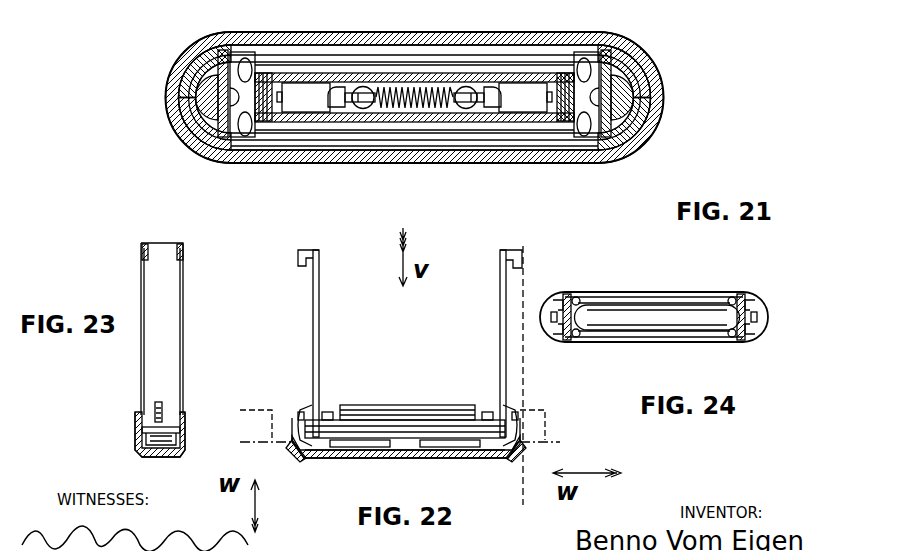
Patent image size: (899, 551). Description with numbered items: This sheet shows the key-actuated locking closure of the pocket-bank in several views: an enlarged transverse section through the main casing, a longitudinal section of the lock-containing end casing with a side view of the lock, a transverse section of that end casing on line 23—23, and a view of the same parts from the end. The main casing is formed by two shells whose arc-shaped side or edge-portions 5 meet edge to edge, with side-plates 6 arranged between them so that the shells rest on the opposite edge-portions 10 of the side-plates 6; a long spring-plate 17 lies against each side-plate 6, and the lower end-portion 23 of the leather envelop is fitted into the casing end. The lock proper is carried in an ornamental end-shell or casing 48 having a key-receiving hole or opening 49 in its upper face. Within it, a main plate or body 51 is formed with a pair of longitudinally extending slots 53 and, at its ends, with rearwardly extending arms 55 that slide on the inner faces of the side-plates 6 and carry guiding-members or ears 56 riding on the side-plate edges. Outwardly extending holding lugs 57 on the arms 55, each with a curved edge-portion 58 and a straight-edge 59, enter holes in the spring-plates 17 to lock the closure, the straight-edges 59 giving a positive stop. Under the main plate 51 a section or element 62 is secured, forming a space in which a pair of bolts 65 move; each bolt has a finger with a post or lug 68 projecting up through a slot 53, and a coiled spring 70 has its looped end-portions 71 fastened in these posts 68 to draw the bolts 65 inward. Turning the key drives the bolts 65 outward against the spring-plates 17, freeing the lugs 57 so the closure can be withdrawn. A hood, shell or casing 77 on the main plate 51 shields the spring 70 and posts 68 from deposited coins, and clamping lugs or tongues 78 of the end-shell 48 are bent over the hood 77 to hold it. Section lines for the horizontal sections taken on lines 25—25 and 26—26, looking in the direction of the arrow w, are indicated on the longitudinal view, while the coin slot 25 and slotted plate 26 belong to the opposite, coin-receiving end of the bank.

In FIG. 21, the arc-shaped side or edge-portions 5 is at (180, 100).
In FIG. 21, the side-plates 6 is at (205, 50).
In FIG. 21, the edge-portions 10 is at (225, 50).
In FIG. 21, the spring-plate 17 is at (207, 108).
In FIG. 22, the end-portion of envelop 23 is at (523, 238).
In FIG. 22, the slot or opening 25 is at (262, 433).
In FIG. 22, the plate or member 26 is at (240, 401).
In FIG. 21, the end-shell or casing 48 is at (405, 146).
In FIG. 23, the end-shell or casing 48 is at (160, 453).
In FIG. 22, the end-shell or casing 48 is at (362, 458).
In FIG. 22, the key-receiving hole or opening 49 is at (405, 452).
In FIG. 21, the main plate or body 51 is at (317, 62).
In FIG. 23, the main plate or body 51 is at (143, 431).
In FIG. 22, the main plate or body 51 is at (420, 425).
In FIG. 24, the main plate or body 51 is at (690, 294).
In FIG. 21, the longitudinally extending slots 53 is at (313, 88).
In FIG. 21, the rearwardly extending arms 55 is at (217, 77).
In FIG. 23, the rearwardly extending arms 55 is at (168, 305).
In FIG. 22, the rearwardly extending arms 55 is at (320, 308).
In FIG. 24, the rearwardly extending arms 55 is at (760, 305).
In FIG. 23, the guiding-members or ears 56 is at (180, 243).
In FIG. 22, the guiding-members or ears 56 is at (298, 256).
In FIG. 24, the guiding-members or ears 56 is at (556, 297).
In FIG. 23, the holding lugs 57 is at (155, 402).
In FIG. 22, the holding lugs 57 is at (308, 408).
In FIG. 24, the holding lugs 57 is at (763, 320).
In FIG. 23, the curved edge-portion 58 is at (153, 407).
In FIG. 22, the curved edge-portion 58 is at (300, 415).
In FIG. 22, the straight-edges 59 is at (298, 456).
In FIG. 23, the section or element 62 is at (168, 447).
In FIG. 22, the section or element 62 is at (452, 448).
In FIG. 21, the bolts 65 is at (272, 112).
In FIG. 21, the posts or lugs 68 is at (333, 106).
In FIG. 21, the coiled spring 70 is at (414, 90).
In FIG. 21, the looped end-portions 71 is at (364, 86).
In FIG. 21, the hood, shell or casing 77 is at (524, 75).
In FIG. 22, the hood, shell or casing 77 is at (440, 408).
In FIG. 24, the hood, shell or casing 77 is at (637, 313).
In FIG. 21, the clamping lugs or tongues 78 is at (245, 60).
In FIG. 22, the clamping lugs or tongues 78 is at (328, 412).
In FIG. 24, the clamping lugs or tongues 78 is at (577, 297).